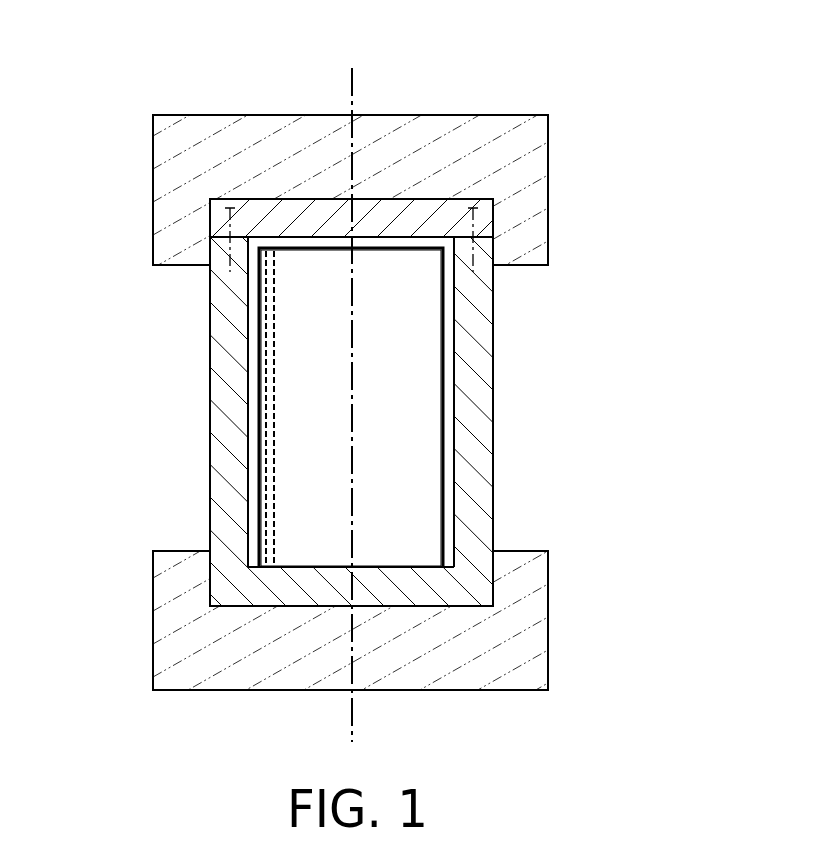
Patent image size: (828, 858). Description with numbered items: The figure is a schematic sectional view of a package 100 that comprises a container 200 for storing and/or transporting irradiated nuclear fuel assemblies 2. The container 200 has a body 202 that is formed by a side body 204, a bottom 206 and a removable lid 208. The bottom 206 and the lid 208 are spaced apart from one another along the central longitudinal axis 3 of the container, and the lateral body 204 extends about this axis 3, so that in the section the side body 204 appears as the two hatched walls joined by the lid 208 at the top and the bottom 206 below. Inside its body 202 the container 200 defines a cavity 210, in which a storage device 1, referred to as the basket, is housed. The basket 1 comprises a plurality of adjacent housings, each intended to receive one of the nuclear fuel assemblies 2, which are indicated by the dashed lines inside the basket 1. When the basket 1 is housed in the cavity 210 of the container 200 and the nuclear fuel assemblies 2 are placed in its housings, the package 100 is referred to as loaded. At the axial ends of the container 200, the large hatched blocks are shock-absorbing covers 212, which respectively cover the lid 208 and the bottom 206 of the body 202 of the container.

The package 100 is at (414, 429).
The container 200 is at (410, 429).
The body 202 is at (414, 439).
The side body 204 is at (473, 447).
The bottom 206 is at (305, 582).
The removable lid 208 is at (253, 213).
The cavity 210 is at (444, 362).
The shock-absorbing covers 212 is at (207, 128).
The storage device 1 is at (425, 310).
The irradiated nuclear fuel assemblies 2 is at (268, 403).
The central longitudinal axis 3 is at (352, 78).